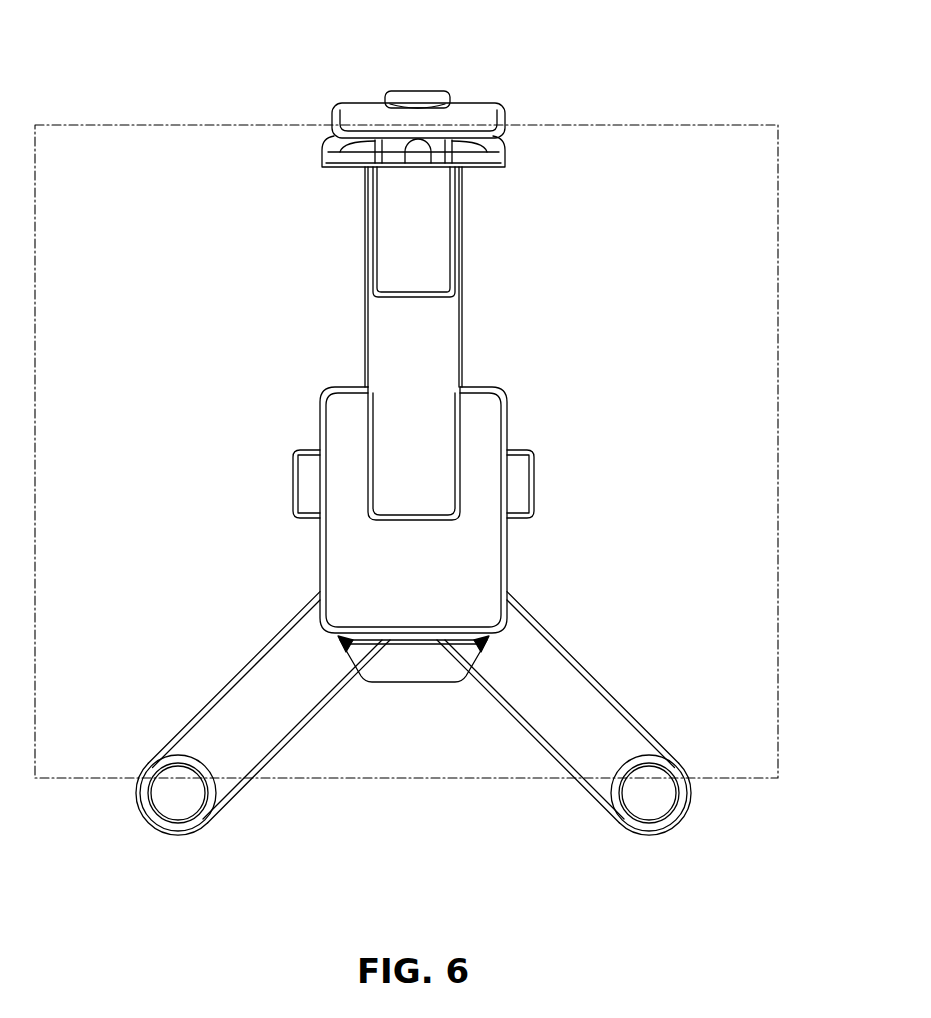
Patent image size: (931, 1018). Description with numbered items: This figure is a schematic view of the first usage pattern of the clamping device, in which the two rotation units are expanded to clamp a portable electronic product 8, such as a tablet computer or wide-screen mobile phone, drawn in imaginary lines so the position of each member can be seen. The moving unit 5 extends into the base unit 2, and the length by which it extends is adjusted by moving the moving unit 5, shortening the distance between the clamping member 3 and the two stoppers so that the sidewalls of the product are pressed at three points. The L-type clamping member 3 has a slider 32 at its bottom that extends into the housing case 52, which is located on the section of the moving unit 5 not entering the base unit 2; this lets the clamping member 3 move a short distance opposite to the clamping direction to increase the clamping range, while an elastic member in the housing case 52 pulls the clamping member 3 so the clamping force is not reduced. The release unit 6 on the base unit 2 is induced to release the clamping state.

The base unit 2 is at (392, 600).
The clamping member 3 is at (463, 113).
The slider 32 is at (392, 150).
The moving unit 5 is at (377, 348).
The housing case 52 is at (435, 213).
The release unit 6 is at (535, 497).
The portable electronic product 8 is at (647, 122).